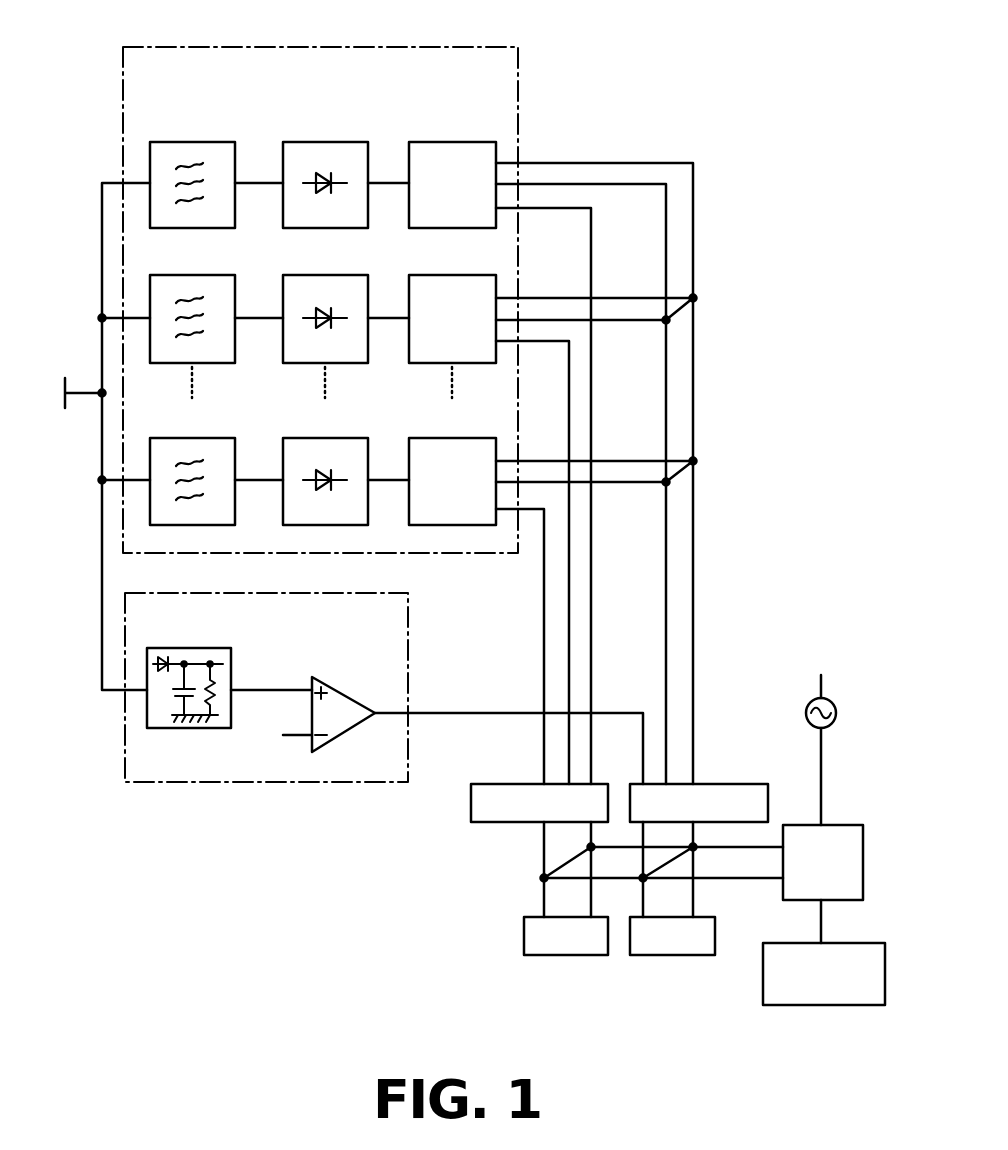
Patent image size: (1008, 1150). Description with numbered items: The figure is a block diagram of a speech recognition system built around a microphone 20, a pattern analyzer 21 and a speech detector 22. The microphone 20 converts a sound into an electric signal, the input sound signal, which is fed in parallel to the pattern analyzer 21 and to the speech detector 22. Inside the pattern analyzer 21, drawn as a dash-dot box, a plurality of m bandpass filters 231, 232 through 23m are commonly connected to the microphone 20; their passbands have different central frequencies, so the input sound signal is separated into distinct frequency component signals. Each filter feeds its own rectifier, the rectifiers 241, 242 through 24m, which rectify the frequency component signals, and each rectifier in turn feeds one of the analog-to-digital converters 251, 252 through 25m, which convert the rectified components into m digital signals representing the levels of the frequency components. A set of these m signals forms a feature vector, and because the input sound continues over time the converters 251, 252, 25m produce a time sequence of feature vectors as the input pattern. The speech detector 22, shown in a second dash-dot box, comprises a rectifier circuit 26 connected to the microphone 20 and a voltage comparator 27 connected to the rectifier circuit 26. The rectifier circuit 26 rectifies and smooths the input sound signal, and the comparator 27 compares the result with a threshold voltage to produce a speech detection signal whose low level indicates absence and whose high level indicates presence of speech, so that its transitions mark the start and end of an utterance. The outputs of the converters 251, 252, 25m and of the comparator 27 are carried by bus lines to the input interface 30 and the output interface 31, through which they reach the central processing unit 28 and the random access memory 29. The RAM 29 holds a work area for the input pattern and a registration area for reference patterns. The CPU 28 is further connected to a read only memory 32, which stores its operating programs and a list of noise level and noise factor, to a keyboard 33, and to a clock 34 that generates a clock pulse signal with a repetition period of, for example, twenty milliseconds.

The pattern analyzer 21 is at (178, 47).
The microphone 20 is at (68, 398).
The bandpass filter 231 is at (178, 142).
The rectifier 241 is at (308, 142).
The analog-to-digital converter 251 is at (440, 142).
The bandpass filter 232 is at (185, 275).
The rectifier 242 is at (308, 275).
The analog-to-digital converter 252 is at (440, 275).
The bandpass filter 23m is at (178, 438).
The rectifier 24m is at (308, 438).
The analog-to-digital converter 25m is at (438, 438).
The speech detector 22 is at (165, 782).
The rectifier circuit 26 is at (158, 648).
The voltage comparator 27 is at (345, 694).
The output interface 31 is at (510, 784).
The input interface 30 is at (728, 784).
The read only memory 32 is at (524, 917).
The random access memory 29 is at (706, 917).
The central processing unit 28 is at (843, 825).
The keyboard 33 is at (880, 943).
The clock 34 is at (859, 735).